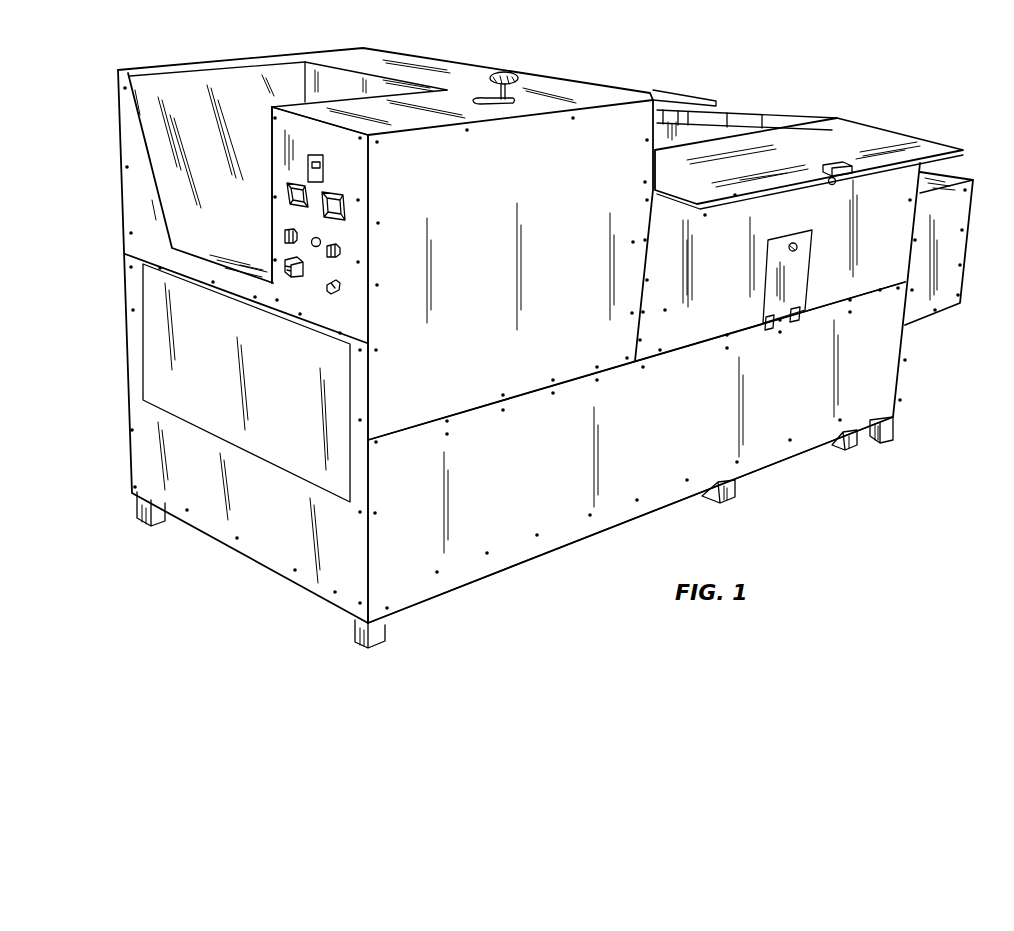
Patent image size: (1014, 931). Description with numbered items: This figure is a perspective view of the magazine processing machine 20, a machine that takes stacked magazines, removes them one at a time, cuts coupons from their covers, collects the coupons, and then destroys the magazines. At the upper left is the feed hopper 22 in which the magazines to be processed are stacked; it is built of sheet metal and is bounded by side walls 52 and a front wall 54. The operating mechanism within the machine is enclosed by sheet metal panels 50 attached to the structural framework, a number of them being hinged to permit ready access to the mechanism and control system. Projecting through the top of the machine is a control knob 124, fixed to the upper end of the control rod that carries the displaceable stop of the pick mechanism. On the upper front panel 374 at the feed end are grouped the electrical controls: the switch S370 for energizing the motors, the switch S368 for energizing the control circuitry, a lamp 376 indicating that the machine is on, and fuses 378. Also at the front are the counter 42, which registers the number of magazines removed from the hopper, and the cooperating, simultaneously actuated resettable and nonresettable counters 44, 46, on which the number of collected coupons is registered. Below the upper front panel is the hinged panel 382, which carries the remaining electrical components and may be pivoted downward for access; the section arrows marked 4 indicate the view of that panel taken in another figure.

The magazine processing machine 20 is at (108, 45).
The hopper 22 is at (250, 92).
The side walls 52 is at (187, 88).
The front wall 54 is at (334, 80).
The control knob 124 is at (509, 71).
The upper front panel 374 is at (368, 168).
The counter 42 is at (316, 157).
The nonresettable counter 46 is at (288, 201).
The resettable counter 44 is at (345, 205).
The fuses 378 is at (285, 236).
The lamp 376 is at (316, 247).
The switch S368 is at (293, 276).
The switch S370 is at (335, 293).
The hinged panel 382 is at (343, 385).
The sheet metal panels 50 is at (503, 562).
The section line for FIG. 4 is at (123, 347).